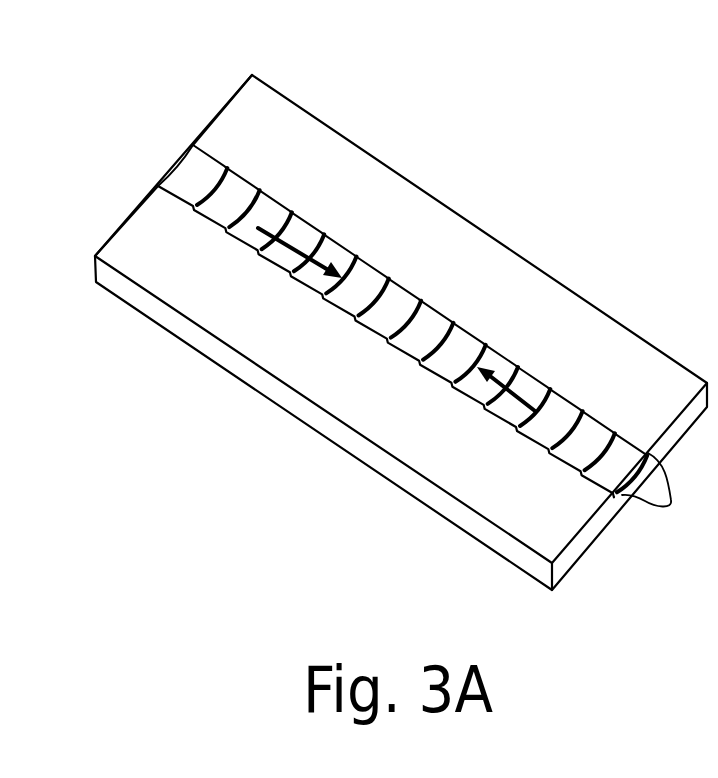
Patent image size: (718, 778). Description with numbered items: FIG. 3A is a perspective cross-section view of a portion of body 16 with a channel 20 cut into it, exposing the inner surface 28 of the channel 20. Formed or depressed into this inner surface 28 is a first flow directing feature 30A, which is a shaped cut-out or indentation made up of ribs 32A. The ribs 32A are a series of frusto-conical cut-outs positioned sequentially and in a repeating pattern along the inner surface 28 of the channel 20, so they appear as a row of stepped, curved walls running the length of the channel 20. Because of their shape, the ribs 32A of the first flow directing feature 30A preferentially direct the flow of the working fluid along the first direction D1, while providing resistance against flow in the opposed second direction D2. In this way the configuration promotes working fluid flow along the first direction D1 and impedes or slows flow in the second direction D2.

The body 16 is at (355, 183).
The channel 20 is at (666, 493).
The inner surface 28 is at (240, 193).
The first flow directing feature 30A is at (399, 351).
The ribs 32A is at (437, 310).
The first direction D1 is at (330, 262).
The second direction D2 is at (522, 368).